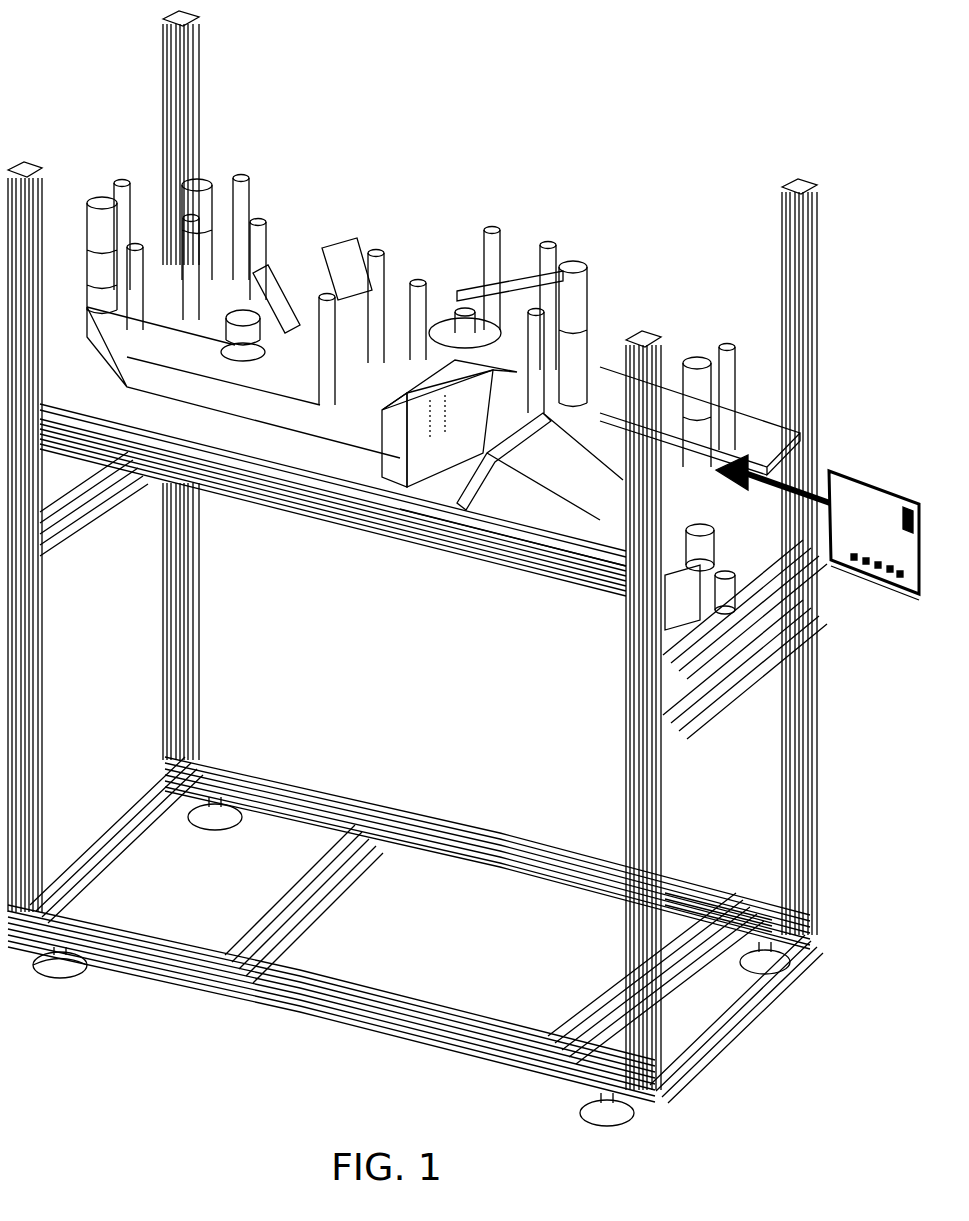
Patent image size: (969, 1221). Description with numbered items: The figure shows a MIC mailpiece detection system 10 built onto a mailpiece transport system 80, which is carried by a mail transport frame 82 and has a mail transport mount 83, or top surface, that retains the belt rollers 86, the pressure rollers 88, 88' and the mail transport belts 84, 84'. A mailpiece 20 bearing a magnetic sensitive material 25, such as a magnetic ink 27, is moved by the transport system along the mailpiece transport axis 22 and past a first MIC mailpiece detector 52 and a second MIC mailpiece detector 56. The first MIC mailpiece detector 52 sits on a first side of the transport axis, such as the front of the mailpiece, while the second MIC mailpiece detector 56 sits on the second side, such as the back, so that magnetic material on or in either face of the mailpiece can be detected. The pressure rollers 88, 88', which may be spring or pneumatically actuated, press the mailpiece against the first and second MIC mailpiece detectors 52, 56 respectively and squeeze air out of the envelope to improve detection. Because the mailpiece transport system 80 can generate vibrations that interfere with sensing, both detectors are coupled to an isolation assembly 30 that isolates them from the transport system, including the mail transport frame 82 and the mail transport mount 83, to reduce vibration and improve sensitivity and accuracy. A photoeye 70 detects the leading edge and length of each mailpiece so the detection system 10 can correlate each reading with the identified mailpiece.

The MIC mailpiece detection system 10 is at (136, 108).
The mailpiece 20 is at (900, 470).
The mailpiece transport axis 22 is at (830, 467).
The magnetic sensitive material 25 is at (847, 558).
The magnetic ink 27 is at (878, 578).
The isolation assembly 30 is at (430, 497).
The first MIC mailpiece detector 52 is at (443, 378).
The second MIC mailpiece detector 56 is at (338, 245).
The photoeye 70 is at (533, 443).
The mailpiece transport system 80 is at (503, 250).
The mail transport frame 82 is at (800, 185).
The mail transport mount 83 is at (530, 497).
The mail transport belt 84 is at (695, 375).
The mail transport belt 84' is at (243, 448).
The belt roller 86 is at (570, 292).
The pressure roller 88 is at (496, 274).
The pressure roller 88' is at (210, 368).